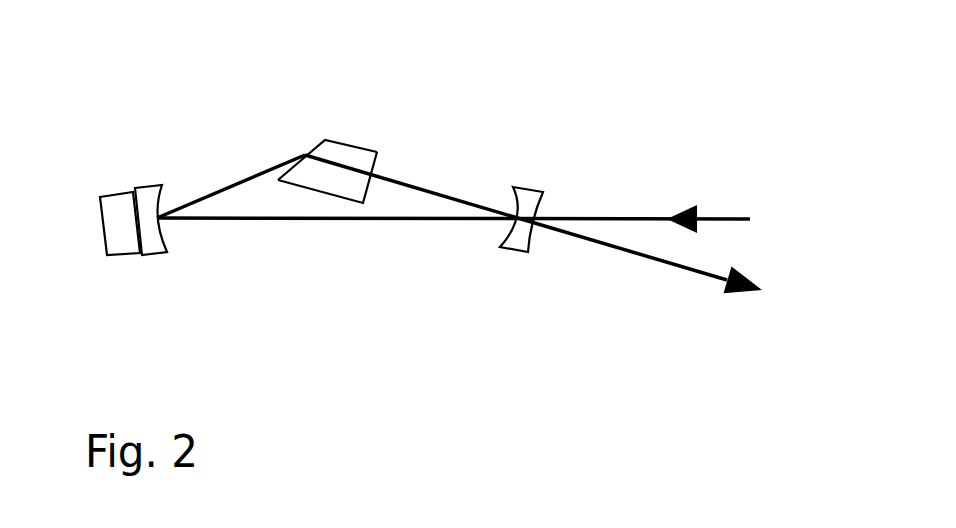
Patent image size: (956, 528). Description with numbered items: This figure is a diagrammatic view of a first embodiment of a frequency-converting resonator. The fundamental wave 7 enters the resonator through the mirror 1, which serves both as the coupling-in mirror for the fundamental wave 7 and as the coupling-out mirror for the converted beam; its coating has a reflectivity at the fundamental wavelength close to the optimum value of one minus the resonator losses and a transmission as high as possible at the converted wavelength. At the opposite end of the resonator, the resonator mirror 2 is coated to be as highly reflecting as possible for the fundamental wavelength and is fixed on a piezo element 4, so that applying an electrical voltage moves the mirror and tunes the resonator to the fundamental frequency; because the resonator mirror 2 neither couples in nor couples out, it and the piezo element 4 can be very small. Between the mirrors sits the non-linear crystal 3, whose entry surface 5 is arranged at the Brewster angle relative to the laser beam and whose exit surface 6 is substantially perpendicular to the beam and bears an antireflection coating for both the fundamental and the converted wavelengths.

The mirror 1 is at (532, 200).
The resonator mirror 2 is at (148, 197).
The non-linear crystal 3 is at (459, 228).
The piezo element 4 is at (120, 207).
The entry surface 5 is at (313, 152).
The exit surface 6 is at (380, 168).
The fundamental wave 7 is at (717, 217).